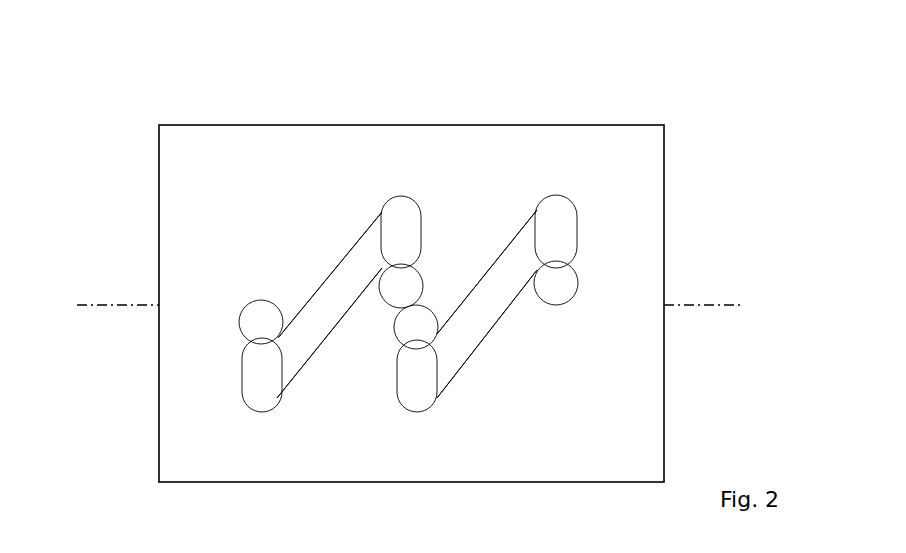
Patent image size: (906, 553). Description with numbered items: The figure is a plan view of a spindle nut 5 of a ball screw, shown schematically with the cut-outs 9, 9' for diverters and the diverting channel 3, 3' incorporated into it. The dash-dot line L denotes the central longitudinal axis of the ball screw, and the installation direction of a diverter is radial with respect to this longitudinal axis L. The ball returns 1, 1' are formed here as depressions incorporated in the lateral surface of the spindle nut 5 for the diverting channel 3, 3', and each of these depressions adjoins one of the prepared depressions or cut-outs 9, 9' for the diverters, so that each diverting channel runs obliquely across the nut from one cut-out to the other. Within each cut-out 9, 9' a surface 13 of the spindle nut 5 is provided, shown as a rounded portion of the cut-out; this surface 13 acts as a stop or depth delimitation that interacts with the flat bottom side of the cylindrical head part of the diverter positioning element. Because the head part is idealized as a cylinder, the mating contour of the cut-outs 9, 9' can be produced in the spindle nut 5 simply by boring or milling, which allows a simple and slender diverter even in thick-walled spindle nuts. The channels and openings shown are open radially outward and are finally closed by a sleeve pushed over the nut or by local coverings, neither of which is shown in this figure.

The ball return 1 is at (296, 224).
The ball return 1' is at (462, 224).
The diverting channel 3 is at (329, 372).
The diverting channel 3' is at (499, 371).
The spindle nut 5 is at (562, 157).
The cut-out for diverter 9 is at (261, 246).
The cut-out for diverter 9' is at (487, 291).
The surface 13 is at (554, 283).
The central longitudinal axis L is at (410, 289).